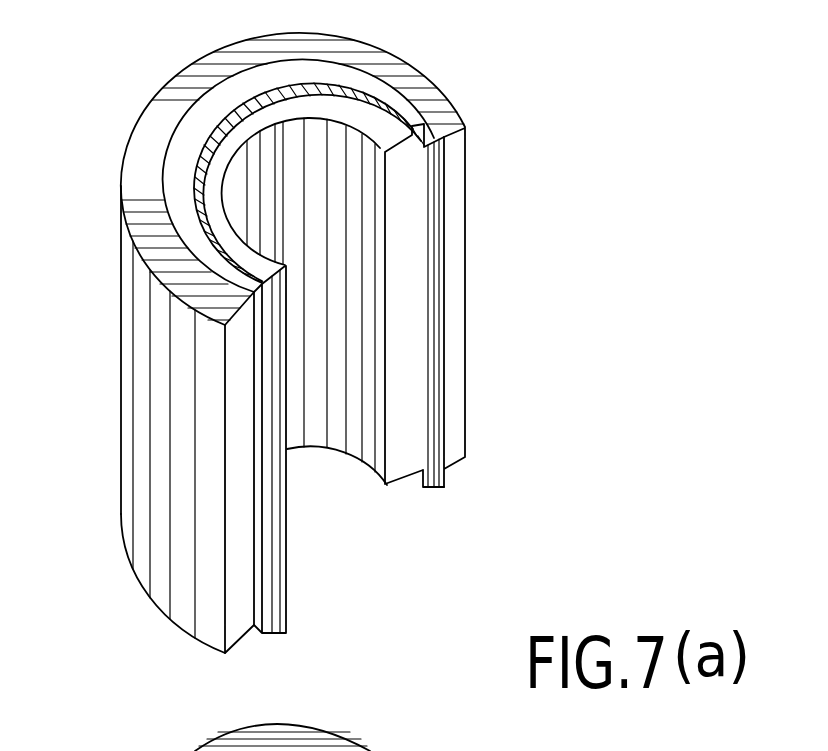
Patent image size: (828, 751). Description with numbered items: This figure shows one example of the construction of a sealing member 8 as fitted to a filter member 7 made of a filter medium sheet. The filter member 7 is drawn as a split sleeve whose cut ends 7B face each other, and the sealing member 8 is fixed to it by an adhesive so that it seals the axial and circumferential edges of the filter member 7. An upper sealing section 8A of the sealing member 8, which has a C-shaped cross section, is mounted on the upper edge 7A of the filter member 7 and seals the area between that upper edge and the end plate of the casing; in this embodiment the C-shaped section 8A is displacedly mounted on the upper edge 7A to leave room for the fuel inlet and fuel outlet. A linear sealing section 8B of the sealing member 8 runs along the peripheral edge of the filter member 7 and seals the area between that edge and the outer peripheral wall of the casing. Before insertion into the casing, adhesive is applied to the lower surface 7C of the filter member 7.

The filter member 7 is at (93, 245).
The upper edge of the filter member 7A is at (182, 92).
The cut end faces of bushing 7B is at (240, 627).
The lower surface of the filter member 7C is at (160, 608).
The sealing member 8 is at (578, 72).
The upper sealing section 8A is at (440, 96).
The linear sealing section 8B is at (440, 178).